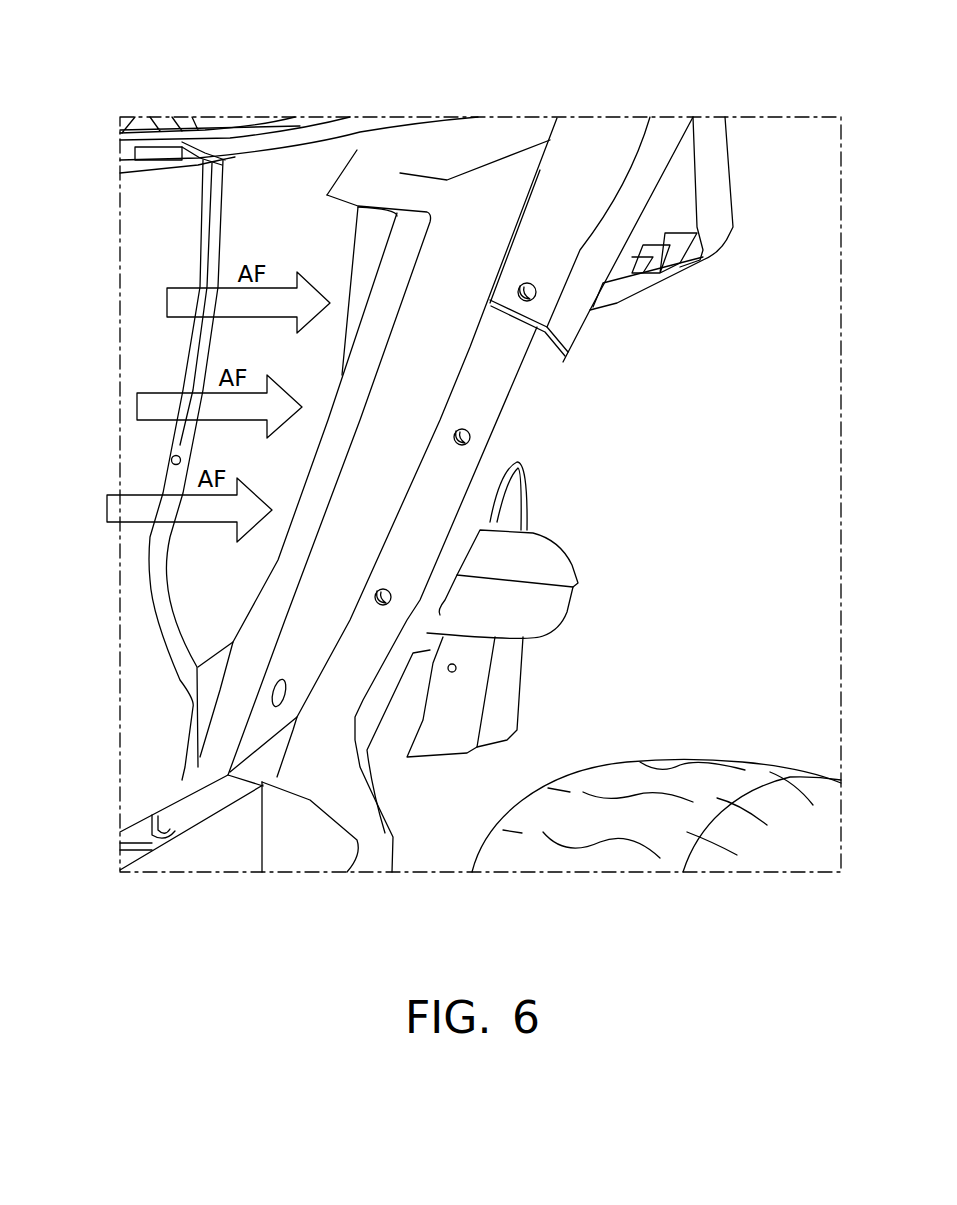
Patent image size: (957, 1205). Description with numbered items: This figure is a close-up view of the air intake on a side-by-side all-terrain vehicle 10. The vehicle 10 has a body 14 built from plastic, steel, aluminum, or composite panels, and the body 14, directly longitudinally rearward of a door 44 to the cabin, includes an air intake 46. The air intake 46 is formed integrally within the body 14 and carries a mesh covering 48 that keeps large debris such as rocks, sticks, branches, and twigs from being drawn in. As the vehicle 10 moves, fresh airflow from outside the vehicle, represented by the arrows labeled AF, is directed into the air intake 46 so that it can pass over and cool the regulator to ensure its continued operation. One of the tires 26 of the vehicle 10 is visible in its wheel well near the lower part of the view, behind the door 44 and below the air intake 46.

The vehicle 10 is at (321, 90).
The body 14 is at (470, 140).
The tires 26 is at (770, 760).
The door 44 is at (135, 227).
The air intake 46 is at (341, 237).
The mesh covering 48 is at (380, 230).